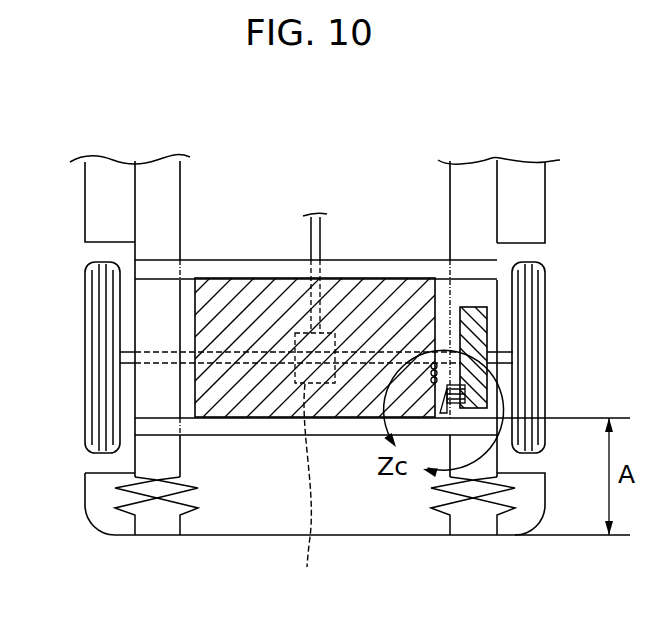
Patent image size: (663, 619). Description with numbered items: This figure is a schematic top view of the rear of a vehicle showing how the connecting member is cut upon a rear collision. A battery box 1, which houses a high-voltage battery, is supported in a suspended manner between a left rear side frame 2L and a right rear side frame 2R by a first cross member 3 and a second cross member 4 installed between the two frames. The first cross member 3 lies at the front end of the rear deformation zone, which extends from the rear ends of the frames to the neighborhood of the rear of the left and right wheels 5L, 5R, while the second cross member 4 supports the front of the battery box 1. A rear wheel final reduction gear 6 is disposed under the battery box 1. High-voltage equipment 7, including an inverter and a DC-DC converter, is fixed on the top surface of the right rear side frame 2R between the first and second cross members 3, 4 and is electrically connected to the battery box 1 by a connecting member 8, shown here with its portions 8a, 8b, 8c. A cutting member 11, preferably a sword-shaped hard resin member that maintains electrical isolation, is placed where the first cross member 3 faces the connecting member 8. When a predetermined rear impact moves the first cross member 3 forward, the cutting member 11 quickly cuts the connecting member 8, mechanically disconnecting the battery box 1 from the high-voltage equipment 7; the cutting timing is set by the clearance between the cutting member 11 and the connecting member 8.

The battery box 1 is at (360, 283).
The left rear side frame 2L is at (153, 168).
The right rear side frame 2R is at (468, 168).
The first cross member 3 is at (223, 420).
The second cross member 4 is at (480, 270).
The left wheel 5L is at (85, 285).
The right wheel 5R is at (545, 272).
The rear wheel final reduction gear 6 is at (308, 491).
The high-voltage equipment 7 is at (478, 323).
The connecting member 8 is at (511, 402).
The chain 8a is at (438, 364).
The nut 8b is at (462, 388).
The stopper 8c is at (448, 413).
The cutting member 11 is at (447, 388).